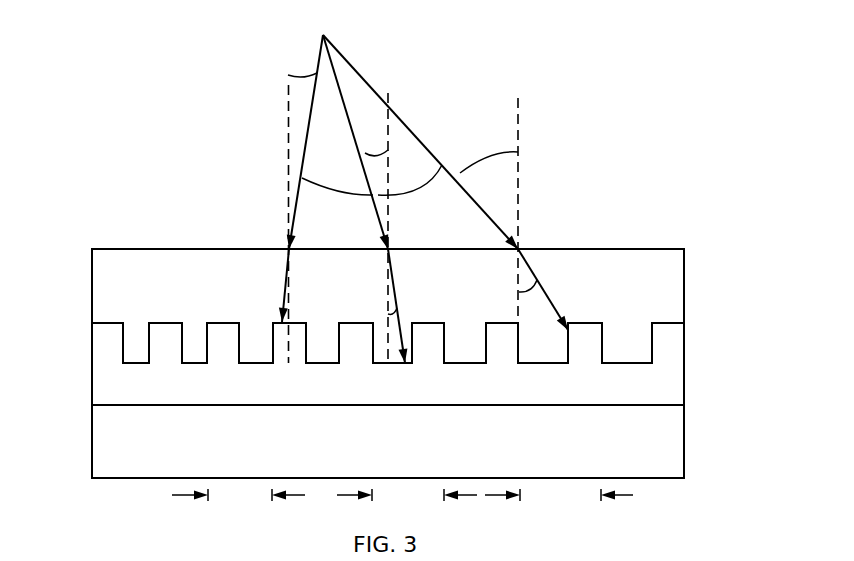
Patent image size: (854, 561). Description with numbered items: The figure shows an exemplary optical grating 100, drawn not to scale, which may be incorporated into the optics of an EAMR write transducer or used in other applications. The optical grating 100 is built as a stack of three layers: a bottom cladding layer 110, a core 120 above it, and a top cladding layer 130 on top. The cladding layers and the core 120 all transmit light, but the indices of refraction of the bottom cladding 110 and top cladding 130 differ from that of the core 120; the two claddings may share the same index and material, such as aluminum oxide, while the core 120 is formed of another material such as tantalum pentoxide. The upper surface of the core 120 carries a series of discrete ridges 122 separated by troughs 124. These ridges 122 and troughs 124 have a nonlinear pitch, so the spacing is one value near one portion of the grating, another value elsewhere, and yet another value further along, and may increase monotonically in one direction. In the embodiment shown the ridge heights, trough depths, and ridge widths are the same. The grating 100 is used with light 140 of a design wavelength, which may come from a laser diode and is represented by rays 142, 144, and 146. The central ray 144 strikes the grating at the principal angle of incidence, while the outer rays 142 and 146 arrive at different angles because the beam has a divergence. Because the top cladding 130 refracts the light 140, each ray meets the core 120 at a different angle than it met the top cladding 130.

The optical grating 100 is at (128, 62).
The bottom cladding layer 110 is at (685, 455).
The core 120 is at (685, 380).
The ridges 122 is at (72, 347).
The troughs 124 is at (635, 345).
The top cladding layer 130 is at (585, 247).
The light 140 is at (222, 168).
The ray 142 is at (345, 100).
The central ray 144 is at (418, 135).
The ray 146 is at (307, 150).